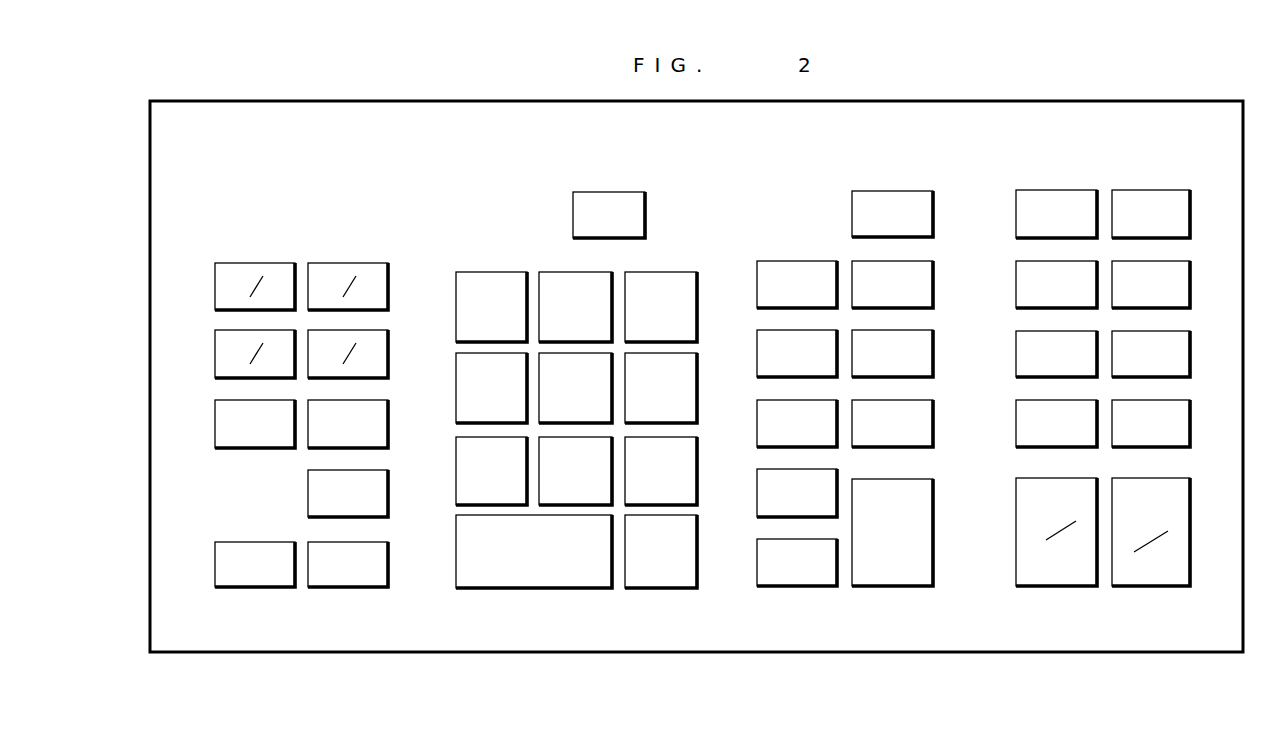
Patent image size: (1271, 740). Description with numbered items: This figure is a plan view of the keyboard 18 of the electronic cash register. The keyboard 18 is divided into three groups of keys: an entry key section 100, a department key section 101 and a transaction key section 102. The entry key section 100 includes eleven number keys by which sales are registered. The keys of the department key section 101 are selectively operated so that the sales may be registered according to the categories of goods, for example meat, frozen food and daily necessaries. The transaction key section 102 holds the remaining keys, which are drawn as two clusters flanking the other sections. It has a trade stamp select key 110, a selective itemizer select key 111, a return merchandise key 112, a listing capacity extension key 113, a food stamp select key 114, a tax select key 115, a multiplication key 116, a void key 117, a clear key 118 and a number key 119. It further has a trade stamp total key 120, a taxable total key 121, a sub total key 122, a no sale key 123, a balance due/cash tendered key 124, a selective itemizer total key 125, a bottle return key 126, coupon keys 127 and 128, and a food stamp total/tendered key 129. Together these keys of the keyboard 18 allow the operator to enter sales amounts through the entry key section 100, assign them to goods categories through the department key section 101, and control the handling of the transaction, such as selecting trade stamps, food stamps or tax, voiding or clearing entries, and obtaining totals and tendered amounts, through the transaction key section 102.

The keyboard 18 is at (1086, 652).
The entry key section 100 is at (657, 270).
The department key section 101 is at (819, 246).
The transaction key section 102 is at (304, 256).
The trade stamp select key 110 is at (213, 291).
The selective itemizer select key 111 is at (213, 353).
The return merchandise key 112 is at (213, 424).
The listing capacity extension key 113 is at (213, 565).
The food stamp select key 114 is at (386, 291).
The tax select key 115 is at (386, 353).
The multiplication key 116 is at (386, 424).
The void key 117 is at (386, 494).
The clear key 118 is at (386, 565).
The number key 119 is at (646, 215).
The trade stamp total key 120 is at (1012, 214).
The taxable total key 121 is at (1012, 285).
The sub total key 122 is at (1012, 354).
The no sale key 123 is at (1012, 424).
The balance due/cash tendered key 124 is at (1012, 528).
The selective itemizer total key 125 is at (1189, 214).
The bottle return key 126 is at (1189, 285).
The coupon key 127 is at (1189, 354).
The coupon key 128 is at (1189, 424).
The food stamp total/tendered key 129 is at (1189, 528).